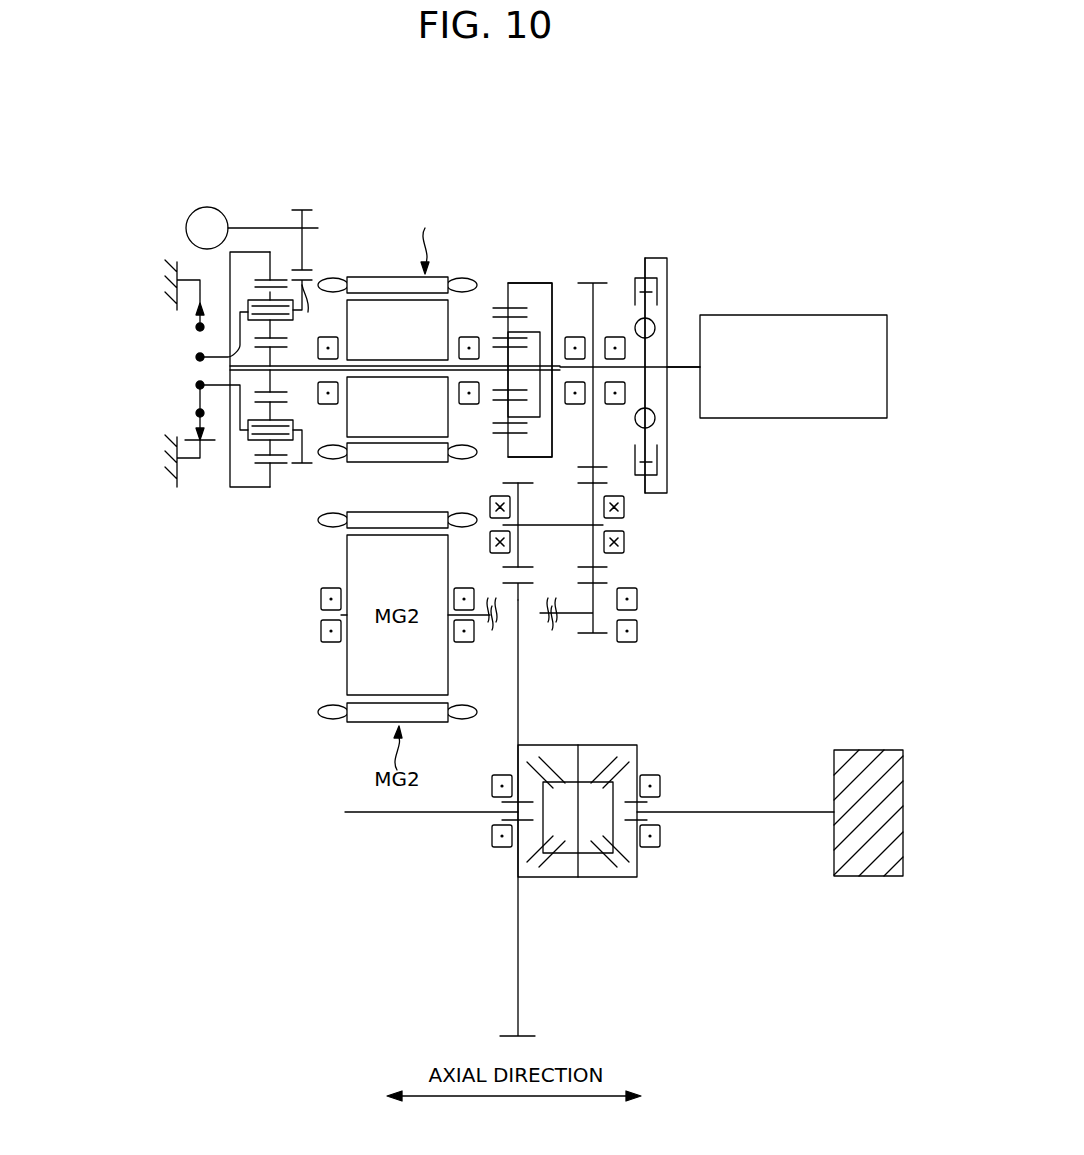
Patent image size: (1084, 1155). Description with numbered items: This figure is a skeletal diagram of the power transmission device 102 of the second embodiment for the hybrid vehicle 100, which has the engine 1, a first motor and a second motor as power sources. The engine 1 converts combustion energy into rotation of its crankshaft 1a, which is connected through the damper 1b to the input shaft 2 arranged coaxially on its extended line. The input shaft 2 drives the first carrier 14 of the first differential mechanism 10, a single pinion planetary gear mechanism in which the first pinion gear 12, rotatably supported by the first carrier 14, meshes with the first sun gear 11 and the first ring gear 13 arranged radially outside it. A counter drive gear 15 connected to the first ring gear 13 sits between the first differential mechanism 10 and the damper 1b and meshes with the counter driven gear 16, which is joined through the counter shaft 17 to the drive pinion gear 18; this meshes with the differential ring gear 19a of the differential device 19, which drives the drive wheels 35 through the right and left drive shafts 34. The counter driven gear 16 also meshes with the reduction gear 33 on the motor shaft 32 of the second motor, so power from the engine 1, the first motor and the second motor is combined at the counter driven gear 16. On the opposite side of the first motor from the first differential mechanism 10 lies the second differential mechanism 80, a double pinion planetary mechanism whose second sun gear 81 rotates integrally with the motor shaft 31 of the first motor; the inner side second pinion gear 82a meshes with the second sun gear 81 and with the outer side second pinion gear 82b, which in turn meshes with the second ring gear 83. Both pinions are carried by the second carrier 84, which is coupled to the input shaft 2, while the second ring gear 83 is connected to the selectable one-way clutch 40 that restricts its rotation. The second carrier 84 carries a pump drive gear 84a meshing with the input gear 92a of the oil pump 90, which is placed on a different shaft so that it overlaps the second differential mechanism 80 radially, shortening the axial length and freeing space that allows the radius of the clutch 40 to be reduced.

The engine 1 is at (788, 316).
The crankshaft 1a is at (678, 360).
The damper 1b is at (655, 246).
The input shaft 2 is at (601, 282).
The first differential mechanism 10 is at (523, 328).
The first sun gear 11 is at (548, 380).
The first pinion gear 12 is at (497, 300).
The first ring gear 13 is at (540, 300).
The first carrier 14 is at (542, 343).
The counter drive gear 15 is at (600, 468).
The counter driven gear 16 is at (575, 480).
The counter shaft 17 is at (550, 523).
The drive pinion gear 18 is at (530, 567).
The differential device 19 is at (610, 718).
The differential ring gear 19a is at (510, 578).
The motor shaft 31 is at (463, 338).
The motor shaft 32 is at (484, 624).
The reduction gear 33 is at (606, 583).
The drive shaft 34 is at (358, 814).
The drive wheel 35 is at (868, 750).
The selectable one-way clutch 40 is at (148, 290).
The second differential mechanism 80 is at (232, 262).
The second sun gear 81 is at (276, 380).
The inner side second pinion gear 82a is at (200, 360).
The outer side second pinion gear 82b is at (200, 327).
The second ring gear 83 is at (263, 276).
The second carrier 84 is at (274, 346).
The pump drive gear 84a is at (301, 268).
The oil pump 90 is at (207, 206).
The input gear 92a is at (312, 280).
The vehicle 100 is at (242, 288).
The power transmission device 102 is at (455, 285).